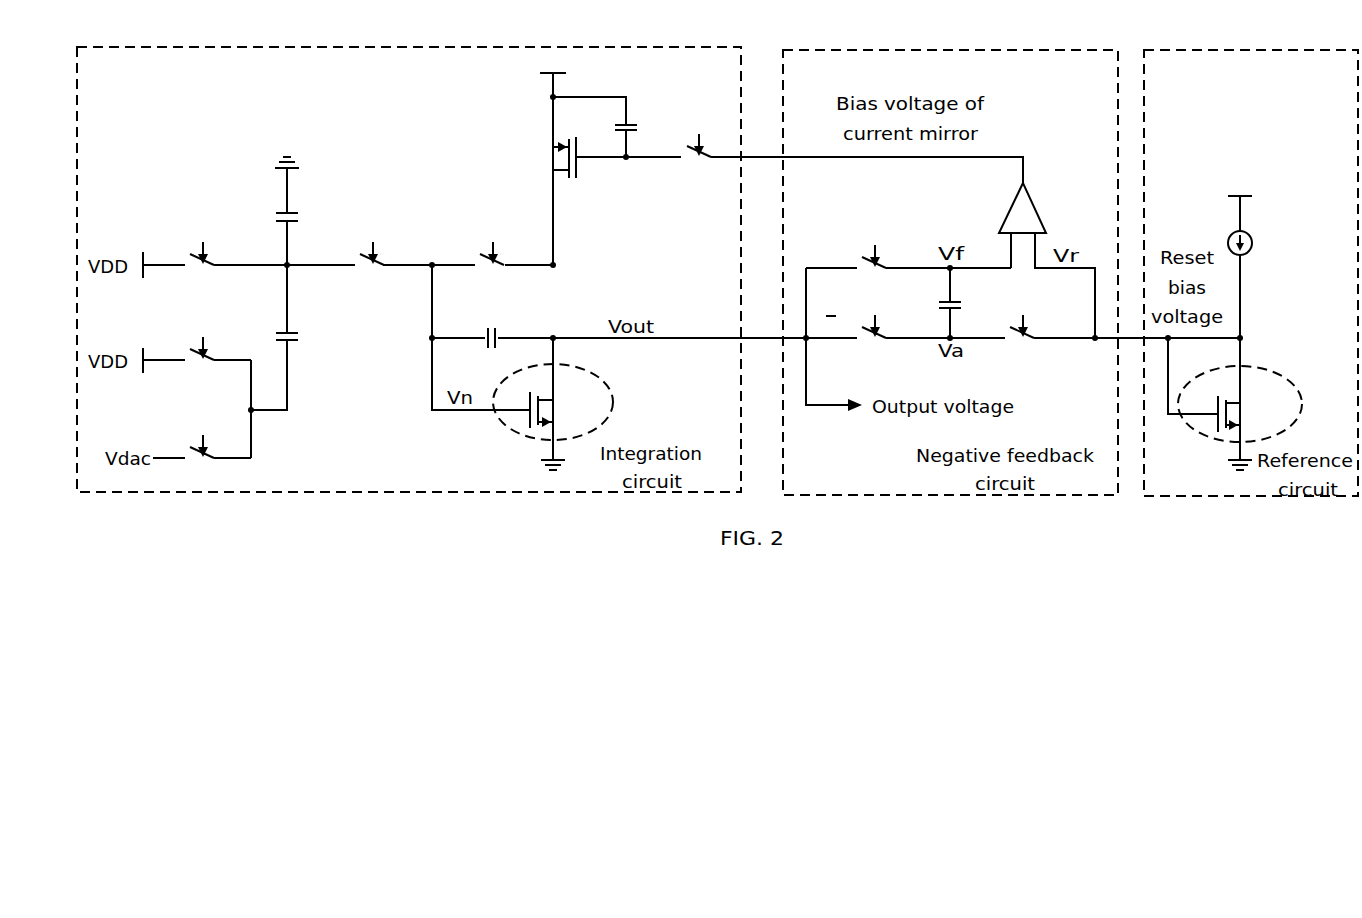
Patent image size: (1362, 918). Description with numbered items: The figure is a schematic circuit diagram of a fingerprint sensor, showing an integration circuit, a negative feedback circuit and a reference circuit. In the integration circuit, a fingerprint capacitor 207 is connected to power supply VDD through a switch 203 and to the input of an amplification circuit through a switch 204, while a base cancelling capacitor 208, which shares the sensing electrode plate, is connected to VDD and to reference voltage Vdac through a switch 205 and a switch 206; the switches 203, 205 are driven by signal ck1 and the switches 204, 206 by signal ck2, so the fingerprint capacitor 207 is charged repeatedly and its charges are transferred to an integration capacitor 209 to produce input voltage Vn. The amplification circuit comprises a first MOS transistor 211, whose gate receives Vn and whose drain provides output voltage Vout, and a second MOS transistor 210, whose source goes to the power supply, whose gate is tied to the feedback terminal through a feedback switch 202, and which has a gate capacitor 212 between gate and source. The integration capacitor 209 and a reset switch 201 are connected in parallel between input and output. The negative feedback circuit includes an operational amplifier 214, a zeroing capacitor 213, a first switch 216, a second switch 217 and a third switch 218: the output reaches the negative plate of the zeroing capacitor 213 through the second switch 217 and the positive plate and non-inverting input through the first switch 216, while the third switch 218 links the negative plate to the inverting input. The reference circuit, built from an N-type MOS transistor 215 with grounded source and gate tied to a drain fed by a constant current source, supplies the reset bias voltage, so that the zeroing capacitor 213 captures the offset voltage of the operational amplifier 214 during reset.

The reset switch 201 is at (499, 256).
The feedback switch 202 is at (824, 147).
The switch 203 is at (204, 263).
The switch 204 is at (373, 256).
The switch 205 is at (218, 386).
The switch 206 is at (218, 447).
The fingerprint capacitor 207 is at (304, 211).
The base cancelling capacitor 208 is at (296, 337).
The integration capacitor 209 is at (497, 331).
The second MOS transistor 210 is at (568, 125).
The first MOS transistor 211 is at (553, 404).
The gate capacitor 212 is at (617, 127).
The zeroing capacitor 213 is at (967, 303).
The operational amplifier 214 is at (1047, 260).
The MOS transistor 215 is at (1235, 404).
The first switch 216 is at (908, 257).
The second switch 217 is at (875, 328).
The third switch 218 is at (1027, 327).